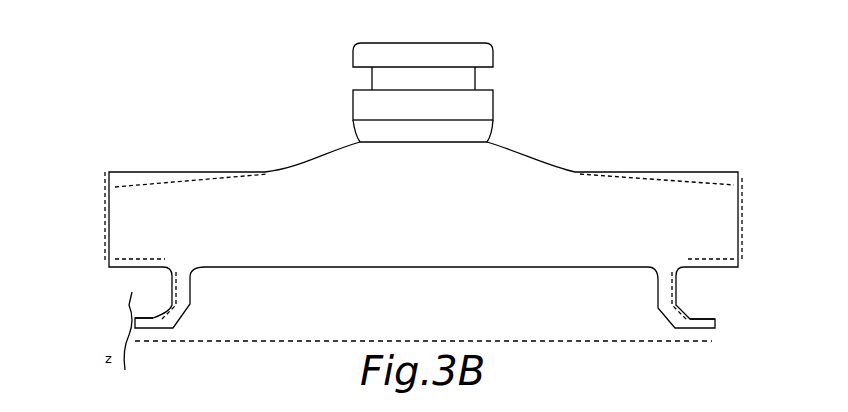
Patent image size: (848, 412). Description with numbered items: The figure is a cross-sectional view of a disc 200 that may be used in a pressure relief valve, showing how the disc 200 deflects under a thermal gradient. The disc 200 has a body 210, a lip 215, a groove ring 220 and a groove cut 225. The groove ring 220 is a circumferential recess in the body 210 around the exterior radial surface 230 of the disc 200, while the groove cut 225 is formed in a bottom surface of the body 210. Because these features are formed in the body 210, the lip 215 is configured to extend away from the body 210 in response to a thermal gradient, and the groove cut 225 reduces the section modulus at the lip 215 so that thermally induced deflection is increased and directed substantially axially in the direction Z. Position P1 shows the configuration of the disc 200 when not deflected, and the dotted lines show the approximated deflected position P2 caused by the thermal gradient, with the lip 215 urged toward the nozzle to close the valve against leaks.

The disc 200 is at (460, 207).
The body 210 is at (528, 160).
The lip 215 is at (697, 330).
The groove ring 220 is at (677, 283).
The groove cut 225 is at (500, 342).
The exterior radial surface 230 is at (740, 212).
The position P1 is at (88, 322).
The position P2 is at (166, 291).